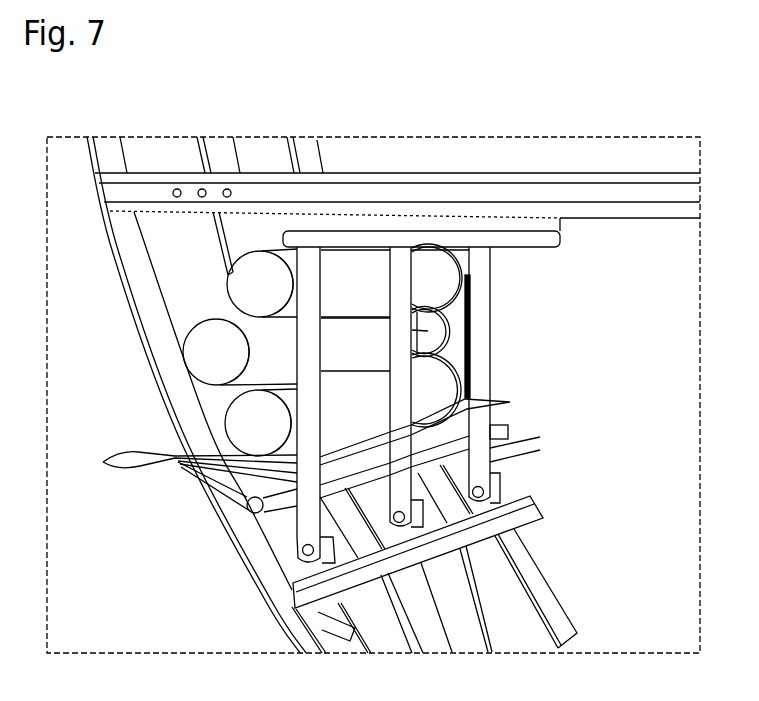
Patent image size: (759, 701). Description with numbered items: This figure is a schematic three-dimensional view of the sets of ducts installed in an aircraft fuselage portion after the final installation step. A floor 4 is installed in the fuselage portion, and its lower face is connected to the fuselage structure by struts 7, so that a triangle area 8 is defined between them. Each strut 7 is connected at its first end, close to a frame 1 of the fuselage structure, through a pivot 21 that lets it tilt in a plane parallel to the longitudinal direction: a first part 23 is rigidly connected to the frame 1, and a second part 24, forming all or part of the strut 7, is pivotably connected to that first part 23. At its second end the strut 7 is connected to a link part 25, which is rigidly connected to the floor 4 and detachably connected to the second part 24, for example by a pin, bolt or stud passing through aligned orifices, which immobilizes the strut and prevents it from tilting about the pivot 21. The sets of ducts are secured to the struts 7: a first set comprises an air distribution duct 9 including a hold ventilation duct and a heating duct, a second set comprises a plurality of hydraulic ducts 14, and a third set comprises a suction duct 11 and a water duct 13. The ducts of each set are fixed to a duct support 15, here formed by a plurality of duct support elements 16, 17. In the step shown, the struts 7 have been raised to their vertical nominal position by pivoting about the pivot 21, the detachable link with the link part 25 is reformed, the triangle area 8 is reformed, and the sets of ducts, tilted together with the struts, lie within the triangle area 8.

The frame 1 is at (550, 621).
The floor 4 is at (612, 198).
The strut 7 is at (480, 417).
The triangle area 8 is at (173, 263).
The air distribution duct 9 is at (260, 277).
The suction duct 11 is at (262, 528).
The water duct 13 is at (247, 504).
The hydraulic ducts 14 is at (128, 462).
The duct support 15 is at (447, 342).
The duct support element 16 is at (270, 340).
The duct support element 17 is at (450, 323).
The pivot 21 is at (300, 545).
The first part 23 is at (297, 567).
The second part 24 is at (479, 287).
The link part 25 is at (284, 230).